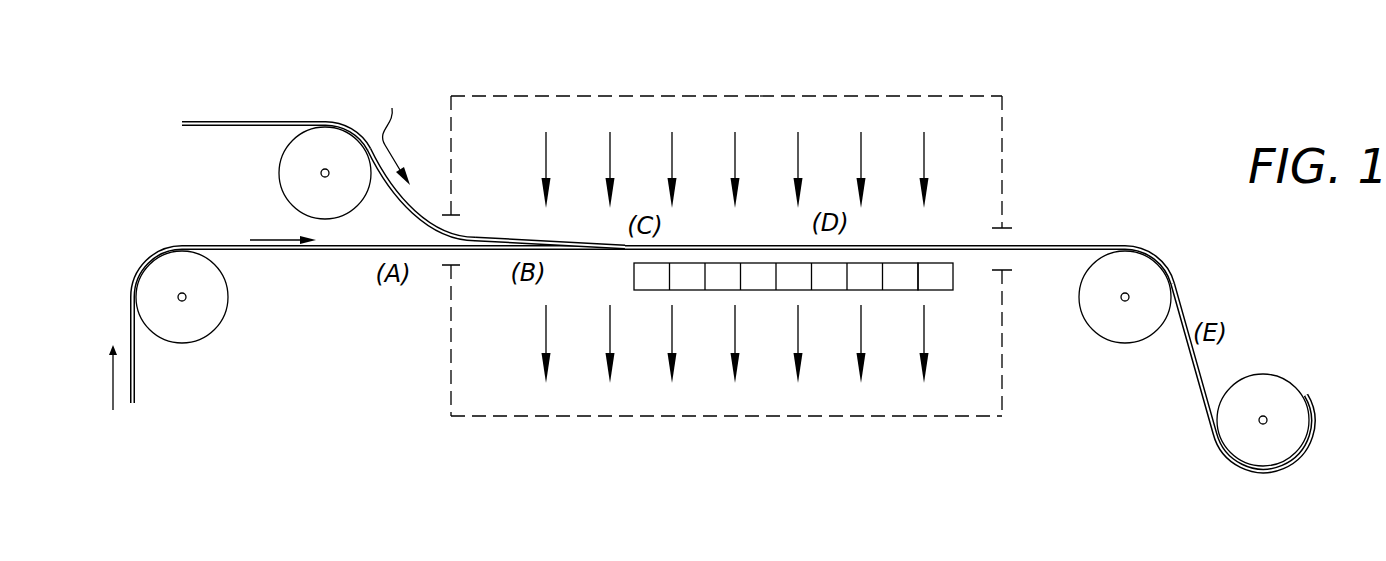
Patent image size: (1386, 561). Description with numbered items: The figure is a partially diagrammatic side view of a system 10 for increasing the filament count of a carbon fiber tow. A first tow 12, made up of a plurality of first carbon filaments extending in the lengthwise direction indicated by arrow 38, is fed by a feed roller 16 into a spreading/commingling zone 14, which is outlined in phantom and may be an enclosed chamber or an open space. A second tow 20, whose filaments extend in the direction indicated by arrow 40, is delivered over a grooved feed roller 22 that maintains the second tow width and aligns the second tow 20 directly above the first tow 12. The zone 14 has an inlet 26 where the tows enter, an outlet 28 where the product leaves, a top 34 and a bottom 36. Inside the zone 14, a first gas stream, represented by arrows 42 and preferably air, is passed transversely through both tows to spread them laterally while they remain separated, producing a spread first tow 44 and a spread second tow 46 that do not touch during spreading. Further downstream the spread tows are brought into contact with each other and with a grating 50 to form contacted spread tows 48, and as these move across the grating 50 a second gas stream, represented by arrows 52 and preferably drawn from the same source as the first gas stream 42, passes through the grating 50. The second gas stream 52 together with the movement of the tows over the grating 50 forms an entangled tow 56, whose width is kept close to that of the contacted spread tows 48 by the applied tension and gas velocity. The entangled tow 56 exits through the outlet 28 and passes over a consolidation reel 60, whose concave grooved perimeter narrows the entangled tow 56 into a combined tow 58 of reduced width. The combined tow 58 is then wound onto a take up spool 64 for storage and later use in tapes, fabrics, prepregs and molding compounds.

The system 10 is at (1060, 108).
The first tow 12 is at (135, 362).
The spreading/commingling zone 14 is at (693, 96).
The feed roller 16 is at (200, 320).
The second tow 20 is at (265, 122).
The feed roller 22 is at (294, 161).
The inlet 26 is at (447, 222).
The outlet 28 is at (1003, 238).
The top 34 is at (845, 96).
The bottom 36 is at (870, 416).
The arrow 38 is at (265, 240).
The arrow 40 is at (395, 132).
The arrows representing first gas stream 42 is at (546, 162).
The spread first tow 44 is at (570, 248).
The spread second tow 46 is at (485, 238).
The contacted spread tows 48 is at (677, 240).
The grating 50 is at (953, 275).
The arrows representing second gas stream 52 is at (672, 162).
The entangled tow 56 is at (905, 246).
The combined tow 58 is at (1178, 308).
The consolidation reel 60 is at (1115, 325).
The take up spool 64 is at (1290, 378).